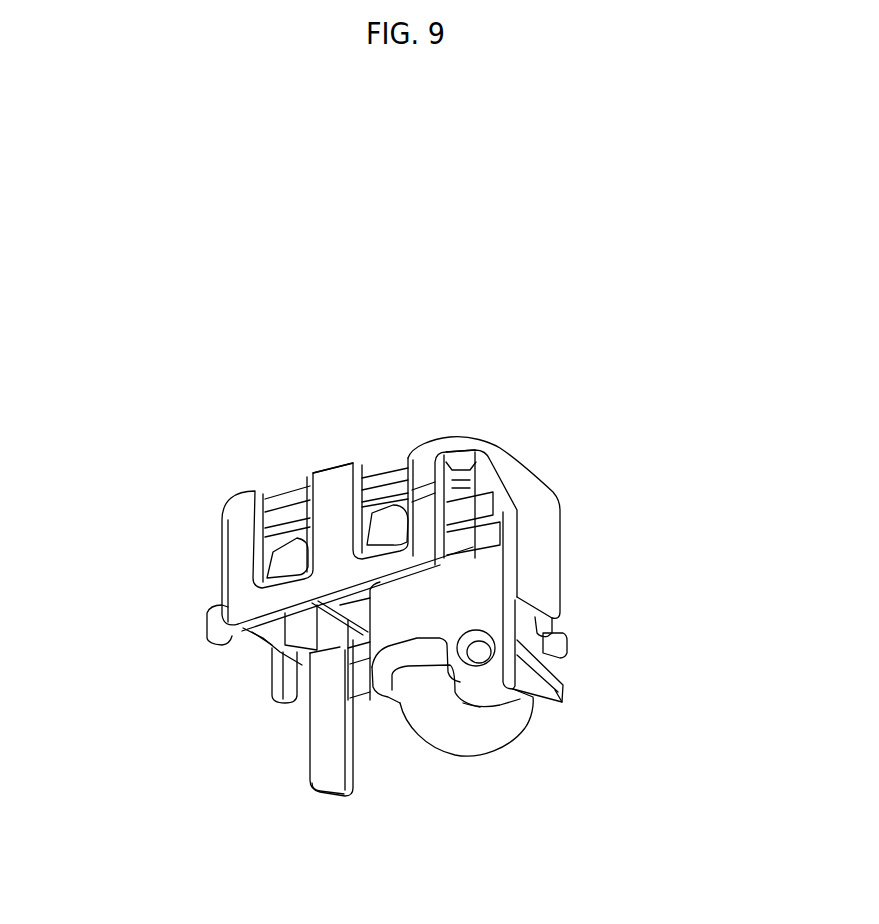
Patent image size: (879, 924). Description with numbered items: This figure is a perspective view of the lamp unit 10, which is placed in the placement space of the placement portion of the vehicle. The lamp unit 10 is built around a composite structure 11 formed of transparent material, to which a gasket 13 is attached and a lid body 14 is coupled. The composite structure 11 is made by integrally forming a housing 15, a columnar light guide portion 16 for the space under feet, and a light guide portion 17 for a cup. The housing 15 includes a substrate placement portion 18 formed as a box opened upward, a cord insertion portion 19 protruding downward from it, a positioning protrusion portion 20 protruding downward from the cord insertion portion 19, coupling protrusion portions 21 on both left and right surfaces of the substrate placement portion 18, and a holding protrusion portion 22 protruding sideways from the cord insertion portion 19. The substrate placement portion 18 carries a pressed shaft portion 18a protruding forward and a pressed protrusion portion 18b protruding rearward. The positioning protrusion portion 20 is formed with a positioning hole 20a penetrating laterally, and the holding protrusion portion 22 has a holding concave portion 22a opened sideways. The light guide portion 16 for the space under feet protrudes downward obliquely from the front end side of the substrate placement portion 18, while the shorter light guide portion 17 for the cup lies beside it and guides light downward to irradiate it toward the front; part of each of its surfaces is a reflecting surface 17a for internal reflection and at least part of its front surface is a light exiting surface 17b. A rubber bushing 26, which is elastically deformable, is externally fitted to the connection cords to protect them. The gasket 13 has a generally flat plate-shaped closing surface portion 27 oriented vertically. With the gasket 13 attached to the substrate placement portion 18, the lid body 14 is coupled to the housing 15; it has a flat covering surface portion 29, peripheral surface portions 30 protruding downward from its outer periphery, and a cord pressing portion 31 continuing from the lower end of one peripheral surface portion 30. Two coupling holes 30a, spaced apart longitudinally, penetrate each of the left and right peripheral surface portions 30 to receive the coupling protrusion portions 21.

The lamp unit 10 is at (609, 364).
The composite structure 11 is at (493, 573).
The gasket 13 is at (385, 478).
The lid body 14 is at (500, 505).
The housing 15 is at (278, 632).
The light guide portion for the space under feet 16 is at (353, 778).
The light guide portion for the cup 17 is at (280, 653).
The reflecting surface 17a is at (308, 707).
The light exiting surface 17b is at (275, 668).
The substrate placement portion 18 is at (283, 620).
The pressed shaft portion 18a is at (207, 615).
The pressed protrusion portion 18b is at (540, 500).
The cord insertion portion 19 is at (384, 693).
The positioning protrusion portion 20 is at (533, 710).
The positioning hole 20a is at (472, 657).
The coupling protrusion portion 21 is at (290, 510).
The holding protrusion portion 22 is at (557, 683).
The holding concave portion 22a is at (518, 712).
The bushing 26 is at (473, 747).
The closing surface portion 27 is at (303, 507).
The covering surface portion 29 is at (280, 507).
The peripheral surface portion 30 is at (233, 550).
The coupling hole 30a is at (282, 508).
The cord pressing portion 31 is at (565, 643).